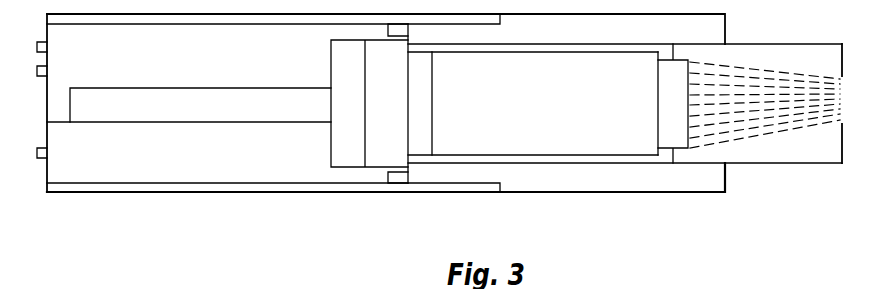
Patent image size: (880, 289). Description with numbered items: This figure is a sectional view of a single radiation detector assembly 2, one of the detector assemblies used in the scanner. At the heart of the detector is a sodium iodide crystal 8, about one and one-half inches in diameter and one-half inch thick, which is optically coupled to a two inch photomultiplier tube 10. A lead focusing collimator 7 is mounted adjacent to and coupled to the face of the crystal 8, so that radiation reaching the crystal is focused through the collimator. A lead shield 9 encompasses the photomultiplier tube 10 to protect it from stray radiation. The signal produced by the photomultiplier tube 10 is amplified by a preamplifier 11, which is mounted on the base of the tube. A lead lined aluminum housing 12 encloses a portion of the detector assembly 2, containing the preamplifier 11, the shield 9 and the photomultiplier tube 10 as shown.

The radiation detector assembly 2 is at (286, 158).
The lead focusing collimator 7 is at (810, 152).
The sodium iodide crystal 8 is at (674, 139).
The lead shield 9 is at (567, 180).
The photomultiplier tube 10 is at (463, 142).
The preamplifier 11 is at (160, 96).
The lead lined aluminum housing 12 is at (258, 193).